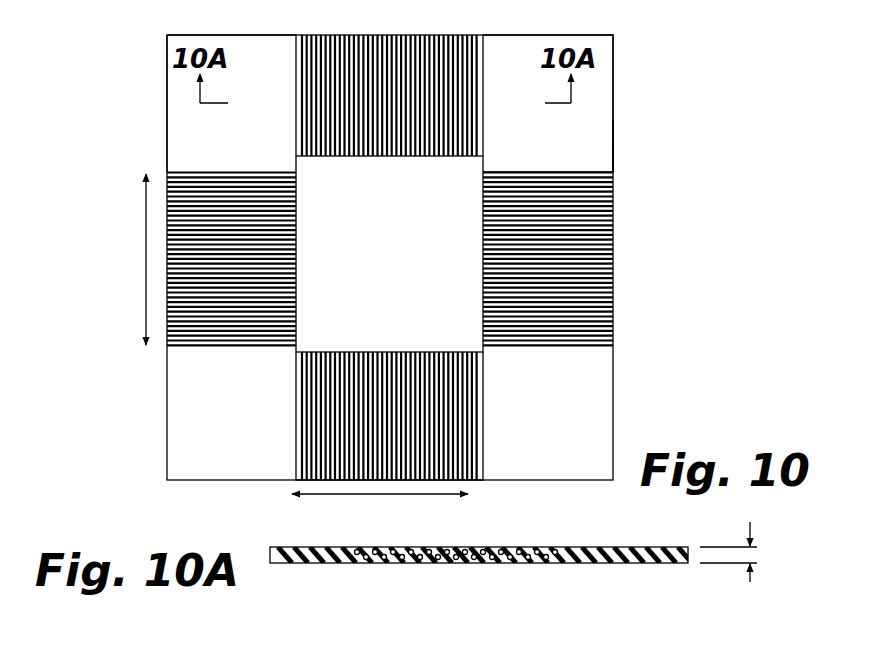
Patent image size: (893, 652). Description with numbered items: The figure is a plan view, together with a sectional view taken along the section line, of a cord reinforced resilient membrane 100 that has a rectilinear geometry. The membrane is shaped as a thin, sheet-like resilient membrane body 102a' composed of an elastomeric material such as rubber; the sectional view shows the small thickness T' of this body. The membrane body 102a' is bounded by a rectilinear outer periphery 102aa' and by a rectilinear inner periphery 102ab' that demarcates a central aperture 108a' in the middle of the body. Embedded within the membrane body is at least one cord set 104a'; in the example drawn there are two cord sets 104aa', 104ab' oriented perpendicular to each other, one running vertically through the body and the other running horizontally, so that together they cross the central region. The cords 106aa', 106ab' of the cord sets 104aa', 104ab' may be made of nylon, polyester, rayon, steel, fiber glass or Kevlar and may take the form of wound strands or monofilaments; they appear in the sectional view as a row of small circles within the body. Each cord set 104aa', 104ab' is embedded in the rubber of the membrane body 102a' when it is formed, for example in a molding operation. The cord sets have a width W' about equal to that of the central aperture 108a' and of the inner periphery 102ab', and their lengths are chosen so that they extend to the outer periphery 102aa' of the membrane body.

In FIG. 10, the cord reinforced resilient membrane 100 is at (642, 124).
In FIG. 10, the membrane body 102a' is at (164, 103).
In FIG. 10A, the membrane body 102a' is at (428, 531).
In FIG. 10, the outer periphery 102aa' is at (679, 169).
In FIG. 10, the inner periphery 102ab' is at (592, 259).
In FIG. 10, the cord set 104a' is at (548, 86).
In FIG. 10, the cord set 104aa' is at (287, 416).
In FIG. 10A, the cord set 104aa' is at (456, 536).
In FIG. 10, the cord set 104ab' is at (580, 93).
In FIG. 10, the cords 106aa' is at (506, 257).
In FIG. 10, the cords 106ab' is at (183, 245).
In FIG. 10, the central aperture 108a' is at (284, 265).
In FIG. 10, the width W' is at (96, 259).
In FIG. 10A, the width W' is at (415, 509).
In FIG. 10A, the thickness T' is at (740, 573).